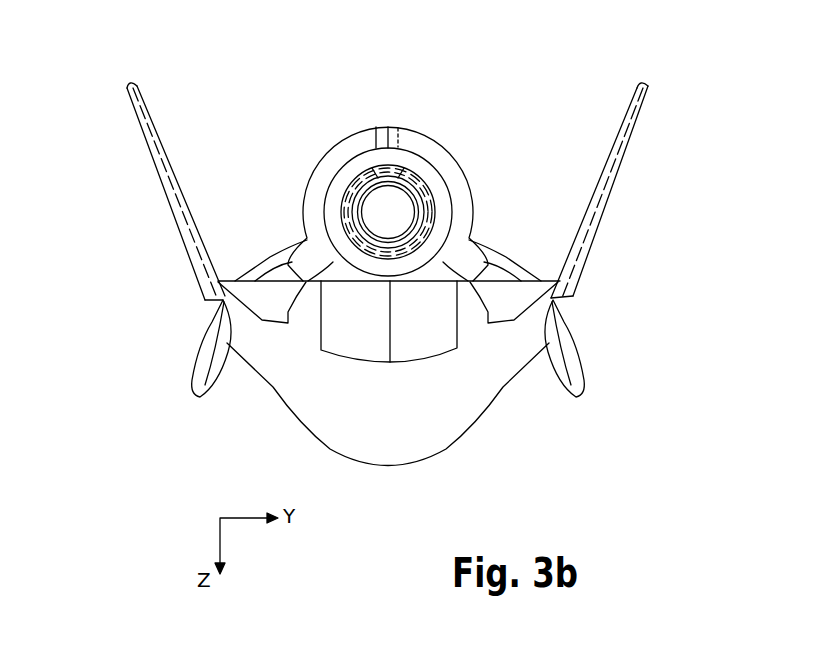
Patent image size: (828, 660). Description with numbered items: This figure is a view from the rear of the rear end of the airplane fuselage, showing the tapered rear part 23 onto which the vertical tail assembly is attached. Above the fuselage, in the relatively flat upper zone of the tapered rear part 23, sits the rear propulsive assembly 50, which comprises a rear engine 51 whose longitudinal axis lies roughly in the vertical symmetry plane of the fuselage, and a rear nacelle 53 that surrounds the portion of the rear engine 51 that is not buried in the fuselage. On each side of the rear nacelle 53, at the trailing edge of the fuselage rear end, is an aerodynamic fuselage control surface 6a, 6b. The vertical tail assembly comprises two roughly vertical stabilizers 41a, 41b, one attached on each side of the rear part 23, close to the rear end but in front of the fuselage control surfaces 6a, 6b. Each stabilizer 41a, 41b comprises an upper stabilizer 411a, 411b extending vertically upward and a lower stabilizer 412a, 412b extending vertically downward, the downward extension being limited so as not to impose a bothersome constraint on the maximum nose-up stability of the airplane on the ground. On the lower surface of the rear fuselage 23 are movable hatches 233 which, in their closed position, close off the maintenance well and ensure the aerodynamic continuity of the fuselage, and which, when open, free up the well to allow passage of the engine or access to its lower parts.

The tapered rear part 23 is at (313, 420).
The movable hatches 233 is at (432, 343).
The rear propulsive assembly 50 is at (349, 135).
The rear nacelle 53 is at (417, 128).
The rear engine 51 is at (423, 190).
The fuselage control surface 6a is at (508, 281).
The fuselage control surface 6b is at (264, 281).
The vertical stabilizer 41a is at (635, 240).
The vertical stabilizer 41b is at (140, 240).
The upper stabilizer 411a is at (620, 137).
The upper stabilizer 411b is at (152, 143).
The lower stabilizer 412a is at (582, 375).
The lower stabilizer 412b is at (197, 380).